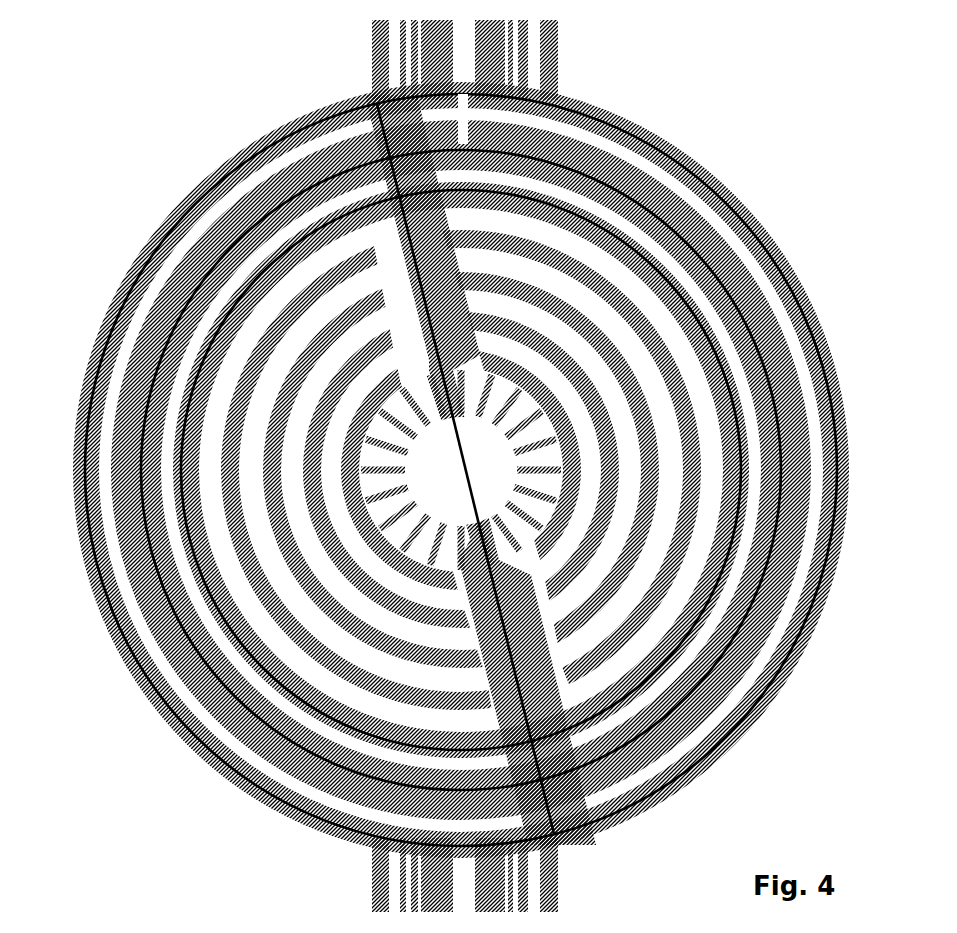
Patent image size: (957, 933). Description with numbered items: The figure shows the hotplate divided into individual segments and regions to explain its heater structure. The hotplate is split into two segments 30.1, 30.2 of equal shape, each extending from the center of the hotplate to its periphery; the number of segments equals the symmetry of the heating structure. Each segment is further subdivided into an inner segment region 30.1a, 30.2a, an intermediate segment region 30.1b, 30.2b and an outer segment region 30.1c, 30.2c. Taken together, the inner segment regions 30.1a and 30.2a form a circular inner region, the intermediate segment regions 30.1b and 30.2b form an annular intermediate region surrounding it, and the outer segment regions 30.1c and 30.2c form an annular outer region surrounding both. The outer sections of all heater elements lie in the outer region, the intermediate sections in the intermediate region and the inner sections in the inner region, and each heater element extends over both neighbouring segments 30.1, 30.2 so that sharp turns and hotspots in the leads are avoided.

The segment 30.1 is at (120, 262).
The segment 30.2 is at (595, 466).
The inner segment region 30.1a is at (438, 470).
The intermediate segment region 30.1b is at (461, 521).
The outer segment region 30.1c is at (425, 507).
The inner segment region 30.2a is at (562, 470).
The intermediate segment region 30.2b is at (461, 470).
The outer segment region 30.2c is at (499, 470).